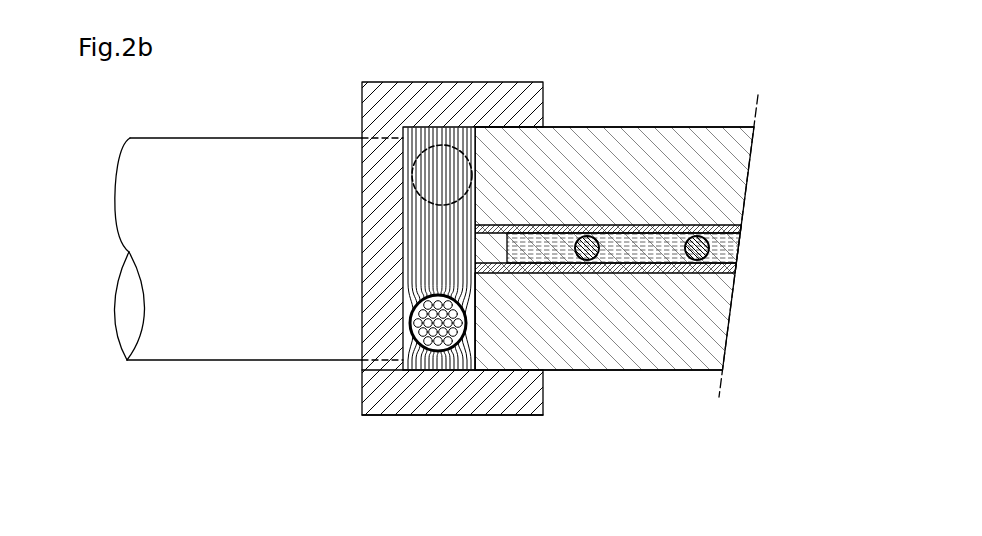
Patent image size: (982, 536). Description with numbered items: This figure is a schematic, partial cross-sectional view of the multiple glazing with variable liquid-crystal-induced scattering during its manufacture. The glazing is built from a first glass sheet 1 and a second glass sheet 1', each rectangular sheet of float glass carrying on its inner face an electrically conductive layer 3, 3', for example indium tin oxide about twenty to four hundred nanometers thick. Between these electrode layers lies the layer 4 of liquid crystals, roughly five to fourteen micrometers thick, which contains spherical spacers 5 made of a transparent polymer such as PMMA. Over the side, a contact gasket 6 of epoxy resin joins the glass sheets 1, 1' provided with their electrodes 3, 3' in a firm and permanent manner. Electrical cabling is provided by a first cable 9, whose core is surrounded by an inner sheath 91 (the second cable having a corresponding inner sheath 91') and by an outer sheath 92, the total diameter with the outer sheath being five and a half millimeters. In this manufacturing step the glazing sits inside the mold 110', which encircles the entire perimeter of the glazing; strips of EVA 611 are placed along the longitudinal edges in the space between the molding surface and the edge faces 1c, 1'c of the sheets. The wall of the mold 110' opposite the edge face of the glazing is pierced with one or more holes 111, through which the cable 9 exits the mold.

The first glass sheet 1 is at (614, 248).
The second glass sheet 1' is at (614, 248).
The side of first glass sheet 1c is at (425, 280).
The side of second glass sheet 1'c is at (438, 175).
The electrically conductive layer 3 is at (605, 304).
The electrically conductive layer 3' is at (608, 192).
The layer of liquid crystals 4 is at (720, 275).
The spherical spacers 5 is at (709, 244).
The contact gasket 6 is at (492, 260).
The first cable 9 is at (398, 305).
The inner sheath 91 is at (378, 154).
The inner sheath 91' is at (350, 264).
The outer sheath 92 is at (165, 396).
The mold 110' is at (452, 219).
The holes 111 is at (395, 404).
The strips of EVA 611 is at (474, 358).